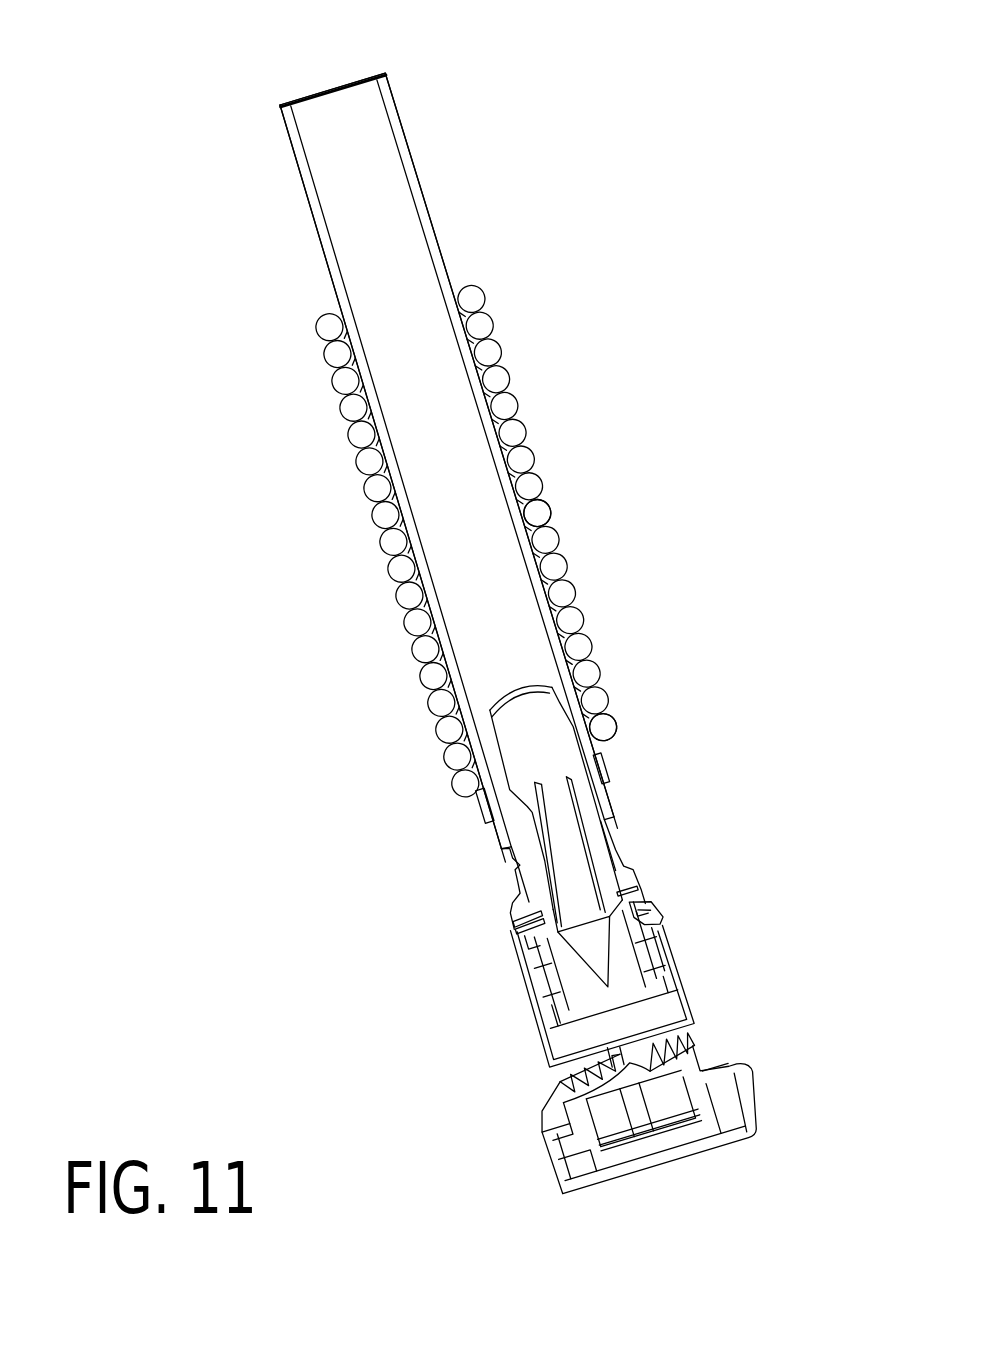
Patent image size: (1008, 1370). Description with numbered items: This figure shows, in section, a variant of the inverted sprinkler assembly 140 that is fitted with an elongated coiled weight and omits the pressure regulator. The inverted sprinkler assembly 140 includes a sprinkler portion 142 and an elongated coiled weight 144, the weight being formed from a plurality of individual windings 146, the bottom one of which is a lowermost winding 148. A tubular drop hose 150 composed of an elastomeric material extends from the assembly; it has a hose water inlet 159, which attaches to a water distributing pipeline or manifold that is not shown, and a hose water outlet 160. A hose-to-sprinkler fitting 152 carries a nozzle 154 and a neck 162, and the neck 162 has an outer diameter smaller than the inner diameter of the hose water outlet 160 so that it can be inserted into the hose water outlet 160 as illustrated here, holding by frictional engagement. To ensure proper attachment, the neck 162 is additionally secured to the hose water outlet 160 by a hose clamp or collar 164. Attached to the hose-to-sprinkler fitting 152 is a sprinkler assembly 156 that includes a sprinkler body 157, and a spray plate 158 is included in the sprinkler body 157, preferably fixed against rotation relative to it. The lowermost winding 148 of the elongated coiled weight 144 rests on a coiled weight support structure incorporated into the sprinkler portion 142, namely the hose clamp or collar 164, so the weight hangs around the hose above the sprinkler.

The inverted sprinkler assembly 140 is at (690, 150).
The sprinkler portion 142 is at (723, 832).
The elongated coiled weight 144 is at (535, 343).
The individual windings 146 is at (544, 513).
The lowermost winding 148 is at (604, 727).
The tubular drop hose 150 is at (390, 102).
The hose-to-sprinkler fitting 152 is at (520, 938).
The nozzle 154 is at (665, 910).
The sprinkler assembly 156 is at (707, 930).
The sprinkler body 157 is at (544, 1042).
The spray plate 158 is at (560, 1108).
The hose water inlet 159 is at (330, 90).
The hose water outlet 160 is at (604, 813).
The neck 162 is at (487, 745).
The hose clamp or collar 164 is at (603, 773).